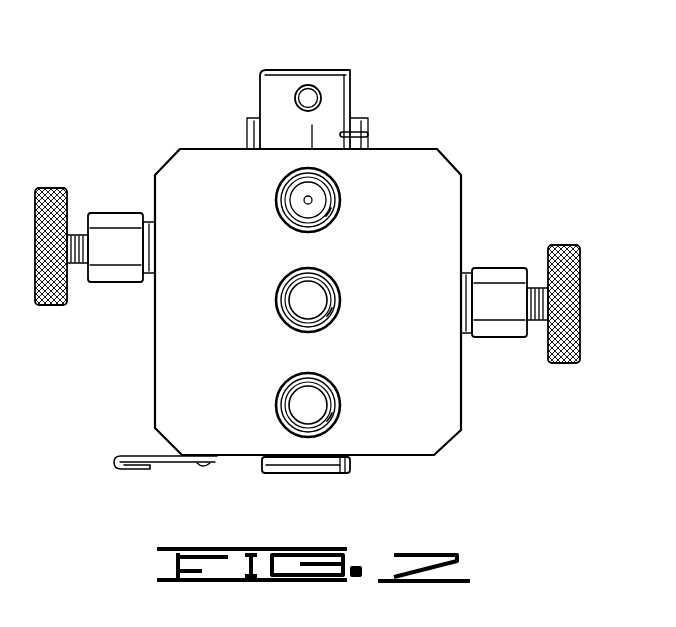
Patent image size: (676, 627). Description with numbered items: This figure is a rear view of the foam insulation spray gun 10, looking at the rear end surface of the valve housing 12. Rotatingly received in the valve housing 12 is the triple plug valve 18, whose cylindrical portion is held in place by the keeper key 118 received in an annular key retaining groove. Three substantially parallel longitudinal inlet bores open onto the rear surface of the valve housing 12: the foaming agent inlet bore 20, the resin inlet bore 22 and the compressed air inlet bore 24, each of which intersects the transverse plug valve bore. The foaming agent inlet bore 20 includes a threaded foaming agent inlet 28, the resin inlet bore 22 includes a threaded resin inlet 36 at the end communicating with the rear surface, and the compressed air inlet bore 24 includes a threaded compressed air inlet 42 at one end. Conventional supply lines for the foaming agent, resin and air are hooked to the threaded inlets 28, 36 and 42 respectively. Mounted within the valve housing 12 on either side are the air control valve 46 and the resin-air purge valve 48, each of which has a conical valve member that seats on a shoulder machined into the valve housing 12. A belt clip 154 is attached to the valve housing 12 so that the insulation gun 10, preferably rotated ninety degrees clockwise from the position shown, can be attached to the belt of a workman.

The foam insulation spray gun 10 is at (456, 140).
The valve housing 12 is at (400, 470).
The triple plug valve 18 is at (312, 58).
The foaming agent inlet bore 20 is at (316, 192).
The resin inlet bore 22 is at (316, 294).
The compressed air inlet bore 24 is at (316, 402).
The threaded foaming agent inlet 28 is at (331, 215).
The threaded resin inlet 36 is at (329, 320).
The threaded compressed air inlet 42 is at (329, 420).
The air control valve 46 is at (111, 198).
The resin-air purge valve 48 is at (499, 256).
The keeper key 118 is at (256, 459).
The belt clip 154 is at (118, 455).